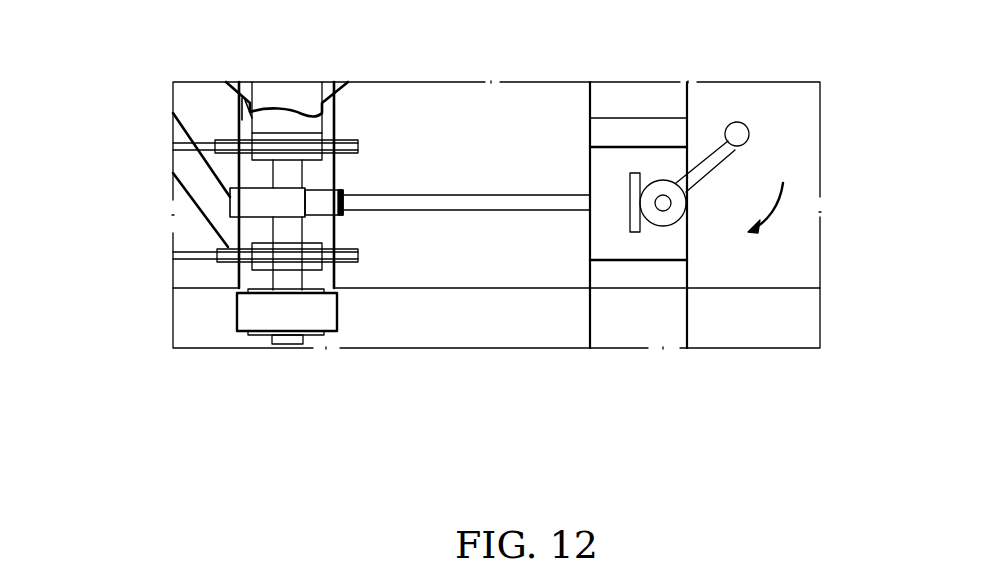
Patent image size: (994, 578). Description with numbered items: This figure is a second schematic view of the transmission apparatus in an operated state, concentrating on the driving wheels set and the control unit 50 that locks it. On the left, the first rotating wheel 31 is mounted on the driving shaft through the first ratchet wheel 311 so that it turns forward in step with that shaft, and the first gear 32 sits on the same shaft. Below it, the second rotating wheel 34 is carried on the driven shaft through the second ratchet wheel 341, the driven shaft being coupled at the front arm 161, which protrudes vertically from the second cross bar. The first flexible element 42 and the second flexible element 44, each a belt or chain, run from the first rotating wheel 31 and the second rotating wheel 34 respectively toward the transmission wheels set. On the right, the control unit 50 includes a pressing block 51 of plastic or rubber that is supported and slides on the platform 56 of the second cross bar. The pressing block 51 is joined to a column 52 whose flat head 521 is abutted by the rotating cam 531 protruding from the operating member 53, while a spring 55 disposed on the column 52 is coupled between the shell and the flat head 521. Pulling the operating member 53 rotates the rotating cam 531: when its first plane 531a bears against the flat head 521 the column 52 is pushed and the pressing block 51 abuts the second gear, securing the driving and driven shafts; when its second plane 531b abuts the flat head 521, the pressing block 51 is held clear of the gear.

The first rotating wheel 31 is at (233, 138).
The first ratchet wheel 311 is at (273, 135).
The first gear 32 is at (172, 180).
The second rotating wheel 34 is at (232, 267).
The second ratchet wheel 341 is at (312, 268).
The first flexible element 42 is at (172, 127).
The second flexible element 44 is at (198, 253).
The control unit 50 is at (727, 178).
The pressing block 51 is at (338, 185).
The column 52 is at (512, 207).
The operating member 53 is at (742, 137).
The rotating cam 531 is at (662, 182).
The first plane 531a is at (662, 228).
The second plane 531b is at (653, 240).
The flat head 521 is at (618, 240).
The spring 55 is at (608, 190).
The platform 56 is at (320, 225).
The front arm 161 is at (328, 315).